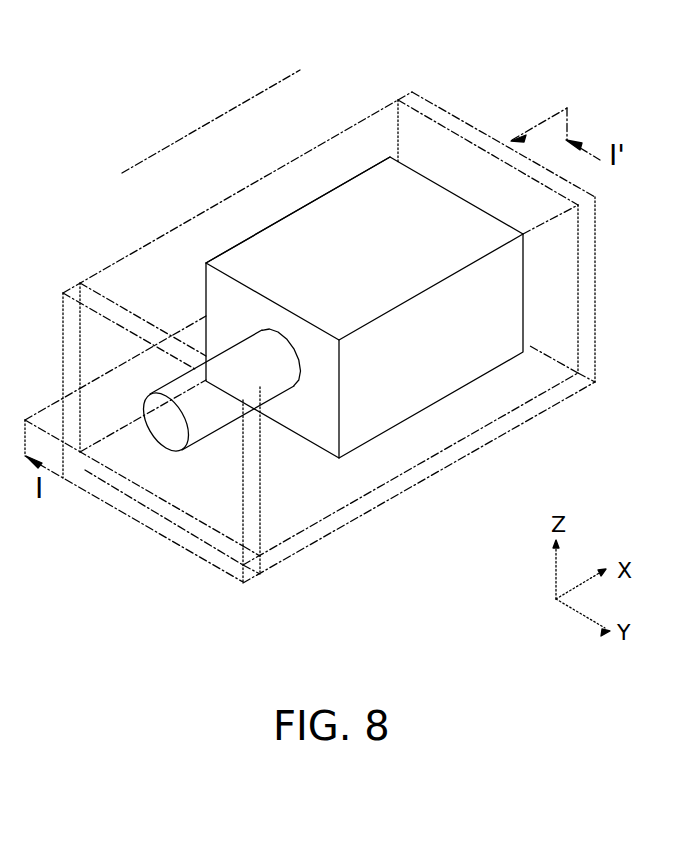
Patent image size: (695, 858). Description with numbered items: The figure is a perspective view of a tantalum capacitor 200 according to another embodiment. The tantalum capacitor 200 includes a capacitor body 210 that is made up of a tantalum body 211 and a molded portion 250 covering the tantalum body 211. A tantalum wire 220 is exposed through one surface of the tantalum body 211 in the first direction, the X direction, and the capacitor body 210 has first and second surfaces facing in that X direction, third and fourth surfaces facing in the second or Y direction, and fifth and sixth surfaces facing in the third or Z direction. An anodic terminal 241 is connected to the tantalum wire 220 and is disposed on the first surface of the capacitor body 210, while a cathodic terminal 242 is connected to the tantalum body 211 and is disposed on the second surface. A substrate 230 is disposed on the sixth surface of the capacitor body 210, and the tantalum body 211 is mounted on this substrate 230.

The tantalum capacitor 200 is at (136, 87).
The capacitor body 210 is at (209, 119).
The tantalum body 211 is at (347, 202).
The tantalum wire 220 is at (153, 395).
The substrate 230 is at (443, 468).
The anodic terminal 241 is at (73, 291).
The cathodic terminal 242 is at (408, 93).
The molded portion 250 is at (259, 183).